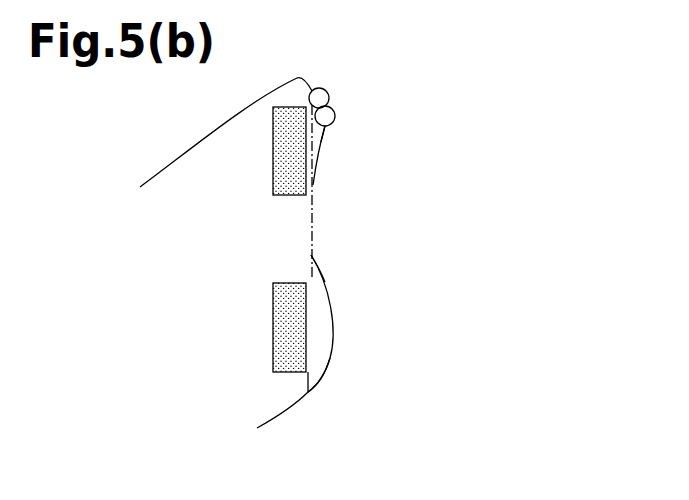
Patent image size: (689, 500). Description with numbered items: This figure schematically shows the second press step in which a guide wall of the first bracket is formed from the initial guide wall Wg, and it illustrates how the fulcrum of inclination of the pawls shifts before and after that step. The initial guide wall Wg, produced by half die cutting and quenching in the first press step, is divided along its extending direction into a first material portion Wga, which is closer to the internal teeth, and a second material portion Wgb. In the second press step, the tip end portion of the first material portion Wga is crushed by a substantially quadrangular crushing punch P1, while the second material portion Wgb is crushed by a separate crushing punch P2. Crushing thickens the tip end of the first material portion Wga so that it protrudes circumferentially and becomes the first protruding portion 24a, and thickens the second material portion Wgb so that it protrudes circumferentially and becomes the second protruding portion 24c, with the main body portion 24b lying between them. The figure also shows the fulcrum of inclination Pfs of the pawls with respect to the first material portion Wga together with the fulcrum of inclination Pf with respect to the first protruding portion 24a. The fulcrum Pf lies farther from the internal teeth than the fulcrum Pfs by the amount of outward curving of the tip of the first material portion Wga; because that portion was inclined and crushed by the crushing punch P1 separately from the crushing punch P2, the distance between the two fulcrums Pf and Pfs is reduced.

The initial guide wall Wg is at (242, 113).
The crushing punch P1 is at (273, 147).
The crushing punch P2 is at (273, 325).
The fulcrum of inclination Pfs is at (327, 88).
The fulcrum of inclination Pf is at (335, 113).
The first material portion Wga is at (320, 167).
The first protruding portion 24a is at (328, 125).
The second material portion Wgb is at (309, 325).
The main body portion 24b is at (312, 250).
The second protruding portion 24c is at (328, 362).